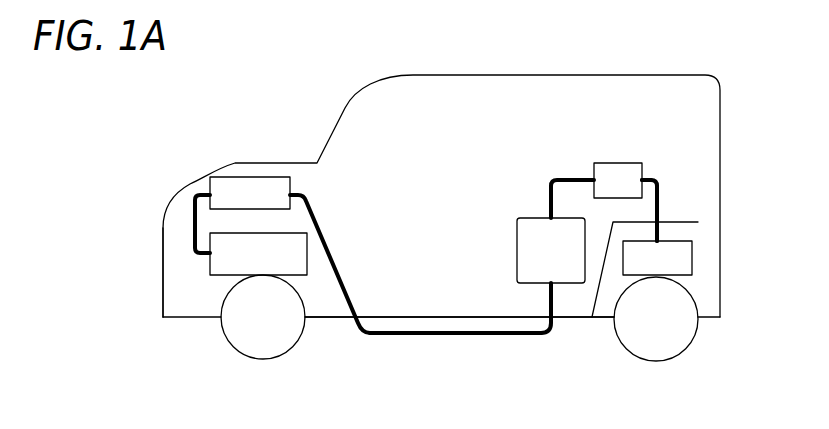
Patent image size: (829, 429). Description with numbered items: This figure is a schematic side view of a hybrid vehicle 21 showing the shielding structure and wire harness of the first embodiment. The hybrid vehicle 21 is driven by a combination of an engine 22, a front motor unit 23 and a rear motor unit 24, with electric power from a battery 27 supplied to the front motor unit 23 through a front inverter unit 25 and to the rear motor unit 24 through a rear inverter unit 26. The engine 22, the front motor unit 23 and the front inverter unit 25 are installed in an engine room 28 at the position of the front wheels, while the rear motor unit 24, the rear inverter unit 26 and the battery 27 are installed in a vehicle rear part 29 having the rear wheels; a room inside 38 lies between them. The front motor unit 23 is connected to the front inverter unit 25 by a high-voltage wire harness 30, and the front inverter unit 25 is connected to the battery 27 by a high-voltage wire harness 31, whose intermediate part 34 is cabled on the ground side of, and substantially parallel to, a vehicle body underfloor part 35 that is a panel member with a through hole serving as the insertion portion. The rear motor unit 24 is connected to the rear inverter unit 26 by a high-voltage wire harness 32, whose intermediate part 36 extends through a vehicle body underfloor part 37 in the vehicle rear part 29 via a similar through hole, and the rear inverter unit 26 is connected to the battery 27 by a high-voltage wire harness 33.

The hybrid vehicle 21 is at (269, 109).
The engine 22 is at (288, 263).
The front motor unit 23 is at (225, 268).
The rear motor unit 24 is at (682, 257).
The front inverter unit 25 is at (238, 187).
The rear inverter unit 26 is at (612, 170).
The battery 27 is at (528, 240).
The engine room 28 is at (168, 268).
The vehicle rear part 29 is at (703, 293).
The high-voltage wire harness 30 is at (193, 213).
The high-voltage wire harness 31 is at (483, 340).
The high-voltage wire harness 32 is at (657, 178).
The high-voltage wire harness 33 is at (560, 176).
The intermediate part 34 is at (393, 340).
The vehicle body underfloor part 35 is at (442, 317).
The intermediate part 36 is at (660, 193).
The vehicle body underfloor part 37 is at (627, 197).
The room inside 38 is at (395, 228).